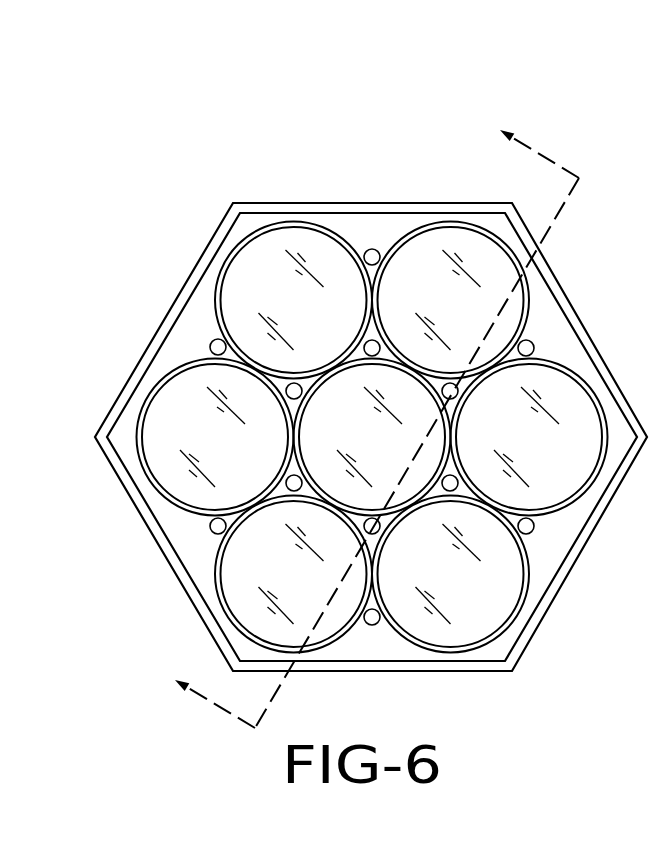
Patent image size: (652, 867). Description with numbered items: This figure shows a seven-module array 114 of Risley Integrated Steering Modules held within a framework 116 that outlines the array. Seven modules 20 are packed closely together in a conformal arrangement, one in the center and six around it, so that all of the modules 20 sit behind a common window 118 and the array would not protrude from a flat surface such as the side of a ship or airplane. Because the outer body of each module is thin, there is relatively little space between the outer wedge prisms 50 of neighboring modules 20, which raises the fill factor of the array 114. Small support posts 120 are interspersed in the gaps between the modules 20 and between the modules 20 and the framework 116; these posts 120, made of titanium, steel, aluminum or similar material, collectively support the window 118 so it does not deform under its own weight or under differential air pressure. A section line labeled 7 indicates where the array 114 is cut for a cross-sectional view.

The seven-module array 114 is at (129, 147).
The framework 116 is at (170, 310).
The window 118 is at (378, 225).
The support posts 120 is at (213, 536).
The outer wedge prisms 50 is at (302, 240).
The module 20 is at (342, 656).
The section line 7- 7 is at (363, 418).